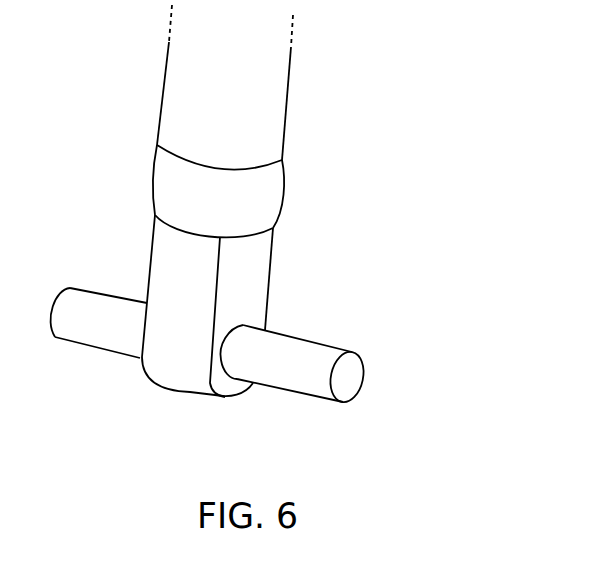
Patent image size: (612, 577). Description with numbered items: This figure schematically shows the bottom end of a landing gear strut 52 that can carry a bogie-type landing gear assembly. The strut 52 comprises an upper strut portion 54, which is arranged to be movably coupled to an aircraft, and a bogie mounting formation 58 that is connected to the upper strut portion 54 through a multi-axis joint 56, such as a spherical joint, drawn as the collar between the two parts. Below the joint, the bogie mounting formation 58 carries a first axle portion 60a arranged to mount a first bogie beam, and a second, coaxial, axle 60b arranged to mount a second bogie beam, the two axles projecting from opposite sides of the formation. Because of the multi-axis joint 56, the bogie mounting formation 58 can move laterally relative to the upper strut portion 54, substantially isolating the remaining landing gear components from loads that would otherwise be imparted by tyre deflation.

The strut 52 is at (360, 162).
The upper strut portion 54 is at (183, 102).
The multi-axis joint 56 is at (173, 193).
The bogie mounting formation 58 is at (250, 298).
The first axle portion 60a is at (110, 335).
The second axle 60b is at (322, 382).